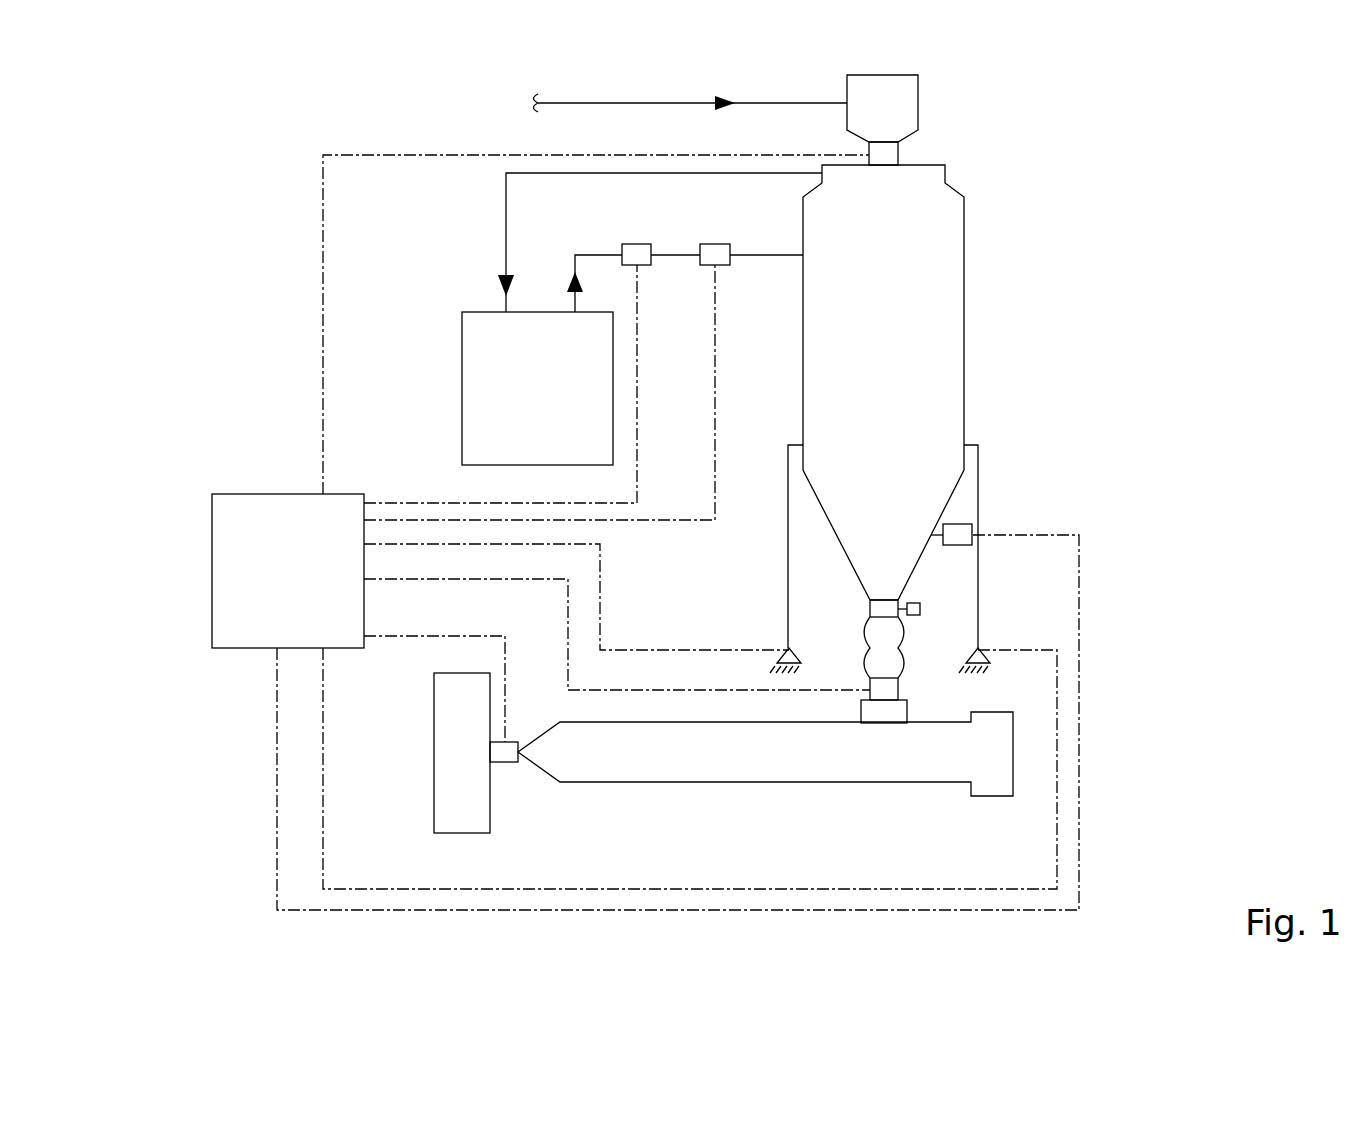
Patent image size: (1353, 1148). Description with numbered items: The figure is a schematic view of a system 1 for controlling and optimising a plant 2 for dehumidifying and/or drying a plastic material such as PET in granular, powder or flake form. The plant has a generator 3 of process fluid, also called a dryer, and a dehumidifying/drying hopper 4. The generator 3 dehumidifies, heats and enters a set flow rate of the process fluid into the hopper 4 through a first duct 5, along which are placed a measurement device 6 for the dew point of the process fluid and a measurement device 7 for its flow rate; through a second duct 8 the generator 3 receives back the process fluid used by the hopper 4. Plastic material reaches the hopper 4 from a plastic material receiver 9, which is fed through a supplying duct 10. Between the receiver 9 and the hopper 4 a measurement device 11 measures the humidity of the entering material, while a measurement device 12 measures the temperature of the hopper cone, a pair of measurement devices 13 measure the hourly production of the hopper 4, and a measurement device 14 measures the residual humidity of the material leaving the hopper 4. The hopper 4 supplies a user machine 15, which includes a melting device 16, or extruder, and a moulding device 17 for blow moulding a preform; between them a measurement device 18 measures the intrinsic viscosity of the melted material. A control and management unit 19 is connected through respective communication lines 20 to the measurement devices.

The system 1 is at (152, 108).
The plant 2 is at (980, 95).
The generator 3 is at (548, 405).
The dehumidifying/drying hopper 4 is at (896, 365).
The first duct 5 is at (590, 255).
The measurement device 6 is at (637, 244).
The measurement device 7 is at (715, 244).
The second duct 8 is at (506, 206).
The plastic material receiver 9 is at (895, 123).
The supplying duct 10 is at (618, 103).
The measurement device 11 is at (898, 148).
The measurement device 12 is at (956, 545).
The measurement devices 13 is at (798, 655).
The measurement device 14 is at (898, 690).
The user machine 15 is at (688, 822).
The melting device 16 is at (766, 769).
The moulding device 17 is at (484, 769).
The measurement device 18 is at (503, 762).
The control and management unit 19 is at (310, 590).
The communication lines 20 is at (322, 278).